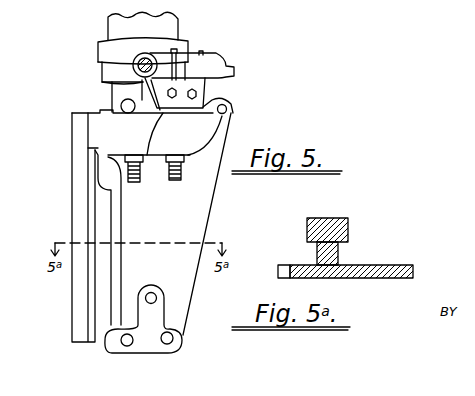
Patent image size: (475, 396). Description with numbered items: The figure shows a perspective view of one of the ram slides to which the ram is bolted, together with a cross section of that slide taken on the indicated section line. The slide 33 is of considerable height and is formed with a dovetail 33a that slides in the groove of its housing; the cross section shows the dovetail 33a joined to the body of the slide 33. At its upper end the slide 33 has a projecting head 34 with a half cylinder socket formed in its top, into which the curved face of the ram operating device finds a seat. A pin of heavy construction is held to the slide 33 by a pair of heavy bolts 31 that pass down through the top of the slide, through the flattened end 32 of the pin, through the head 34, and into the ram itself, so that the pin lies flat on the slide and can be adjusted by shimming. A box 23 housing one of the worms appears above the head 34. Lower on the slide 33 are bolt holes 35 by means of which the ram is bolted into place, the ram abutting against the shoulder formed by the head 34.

In FIG. 5, the box 23 is at (192, 65).
In FIG. 5, the heavy bolt 31 is at (136, 183).
In FIG. 5, the flattened end 32 is at (117, 108).
In FIG. 5, the slide 33 is at (202, 200).
In FIG. 5A, the slide 33 is at (348, 262).
In FIG. 5, the dovetail 33a is at (78, 199).
In FIG. 5A, the dovetail 33a is at (340, 217).
In FIG. 5, the projecting head 34 is at (199, 138).
In FIG. 5, the bolt hole 35 is at (175, 338).